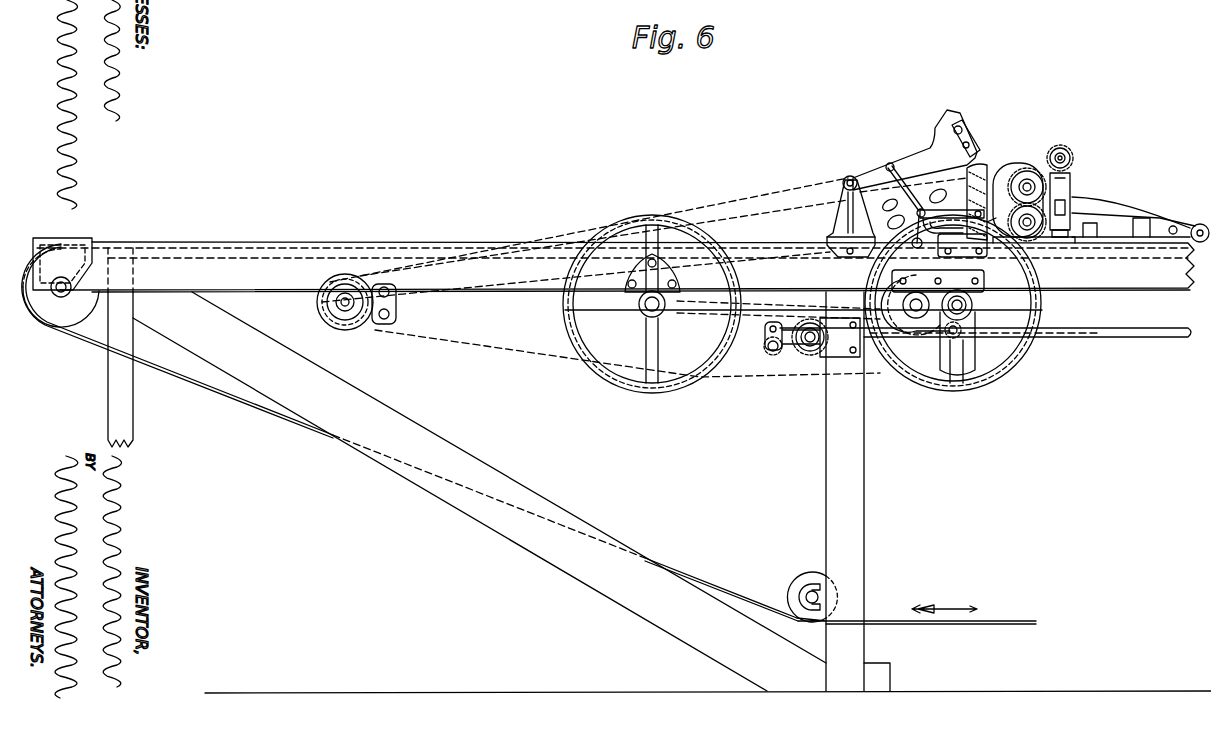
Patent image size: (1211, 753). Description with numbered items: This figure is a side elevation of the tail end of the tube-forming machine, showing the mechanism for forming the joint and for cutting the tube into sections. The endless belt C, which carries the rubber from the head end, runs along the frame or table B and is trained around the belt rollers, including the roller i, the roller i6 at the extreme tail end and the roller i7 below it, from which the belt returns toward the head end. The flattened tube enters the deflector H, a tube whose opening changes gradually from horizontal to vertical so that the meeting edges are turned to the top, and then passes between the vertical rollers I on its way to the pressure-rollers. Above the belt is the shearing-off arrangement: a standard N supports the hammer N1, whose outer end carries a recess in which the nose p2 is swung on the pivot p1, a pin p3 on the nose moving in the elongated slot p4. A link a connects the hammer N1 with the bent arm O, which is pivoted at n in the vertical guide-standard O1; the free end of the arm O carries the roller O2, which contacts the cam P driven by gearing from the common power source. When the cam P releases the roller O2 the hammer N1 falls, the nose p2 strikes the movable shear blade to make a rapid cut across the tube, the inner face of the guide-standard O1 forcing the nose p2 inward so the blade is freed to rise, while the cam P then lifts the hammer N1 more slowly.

The frame or table B is at (858, 528).
The endless belt C is at (250, 402).
The roller i is at (640, 326).
The roller i6 is at (76, 250).
The roller i7 is at (798, 588).
The cam P is at (912, 350).
The standard N is at (842, 214).
The hammer N1 is at (937, 123).
The pivot p1 is at (964, 129).
The nose p2 is at (986, 170).
The pin p3 is at (973, 148).
The elongated slot p4 is at (983, 140).
The bent arm O is at (940, 210).
The vertical guide-standard O1 is at (1000, 250).
The roller O2 is at (902, 238).
The link a is at (887, 205).
The pivot n is at (996, 217).
The vertical rollers I is at (1076, 181).
The deflector H is at (1095, 203).